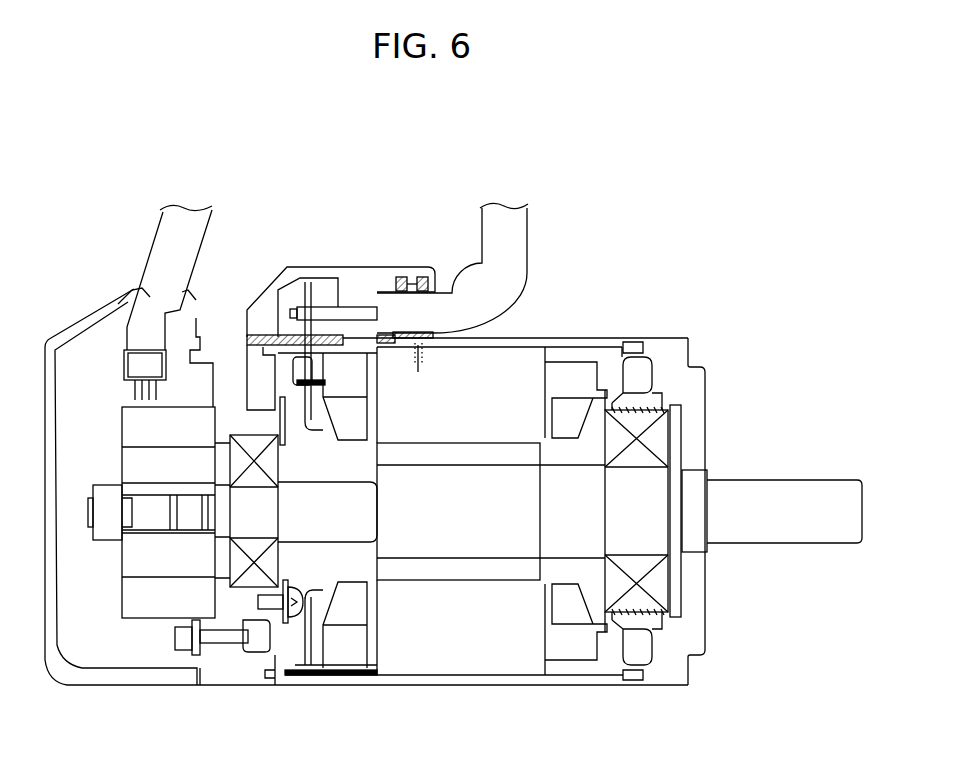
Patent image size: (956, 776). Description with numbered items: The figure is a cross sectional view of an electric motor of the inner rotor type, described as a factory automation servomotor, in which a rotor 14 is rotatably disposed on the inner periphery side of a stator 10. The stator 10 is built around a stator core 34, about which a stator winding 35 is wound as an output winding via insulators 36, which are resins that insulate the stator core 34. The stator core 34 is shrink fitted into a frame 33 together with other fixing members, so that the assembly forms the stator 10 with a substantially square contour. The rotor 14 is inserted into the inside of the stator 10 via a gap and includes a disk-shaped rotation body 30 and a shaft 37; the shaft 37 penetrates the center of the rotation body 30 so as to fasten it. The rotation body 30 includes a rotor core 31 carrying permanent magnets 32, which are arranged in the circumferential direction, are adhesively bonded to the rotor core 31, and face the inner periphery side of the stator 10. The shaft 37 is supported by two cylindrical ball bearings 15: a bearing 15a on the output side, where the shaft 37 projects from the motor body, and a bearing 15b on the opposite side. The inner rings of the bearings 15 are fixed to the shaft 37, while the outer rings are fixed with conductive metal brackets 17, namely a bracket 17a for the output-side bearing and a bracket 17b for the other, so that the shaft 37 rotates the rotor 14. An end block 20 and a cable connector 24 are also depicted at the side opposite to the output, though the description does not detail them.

The stator 10 is at (665, 353).
The rotor 14 is at (546, 479).
The bearings 15 is at (215, 222).
The bearing on the output side 15a is at (613, 590).
The bearing on the side opposite to the output side 15b is at (238, 467).
The bracket 17 is at (494, 530).
The conductive metal bracket 17a is at (663, 623).
The conductive metal bracket 17b is at (150, 655).
The end block 20 is at (122, 425).
The cable connector 24 is at (147, 467).
The rotation body 30 is at (541, 475).
The rotor core 31 is at (527, 482).
The permanent magnets 32 is at (523, 455).
The frame 33 is at (610, 337).
The stator core 34 is at (515, 368).
The stator winding 35 is at (560, 410).
The insulators 36 is at (352, 657).
The shaft 37 is at (772, 493).